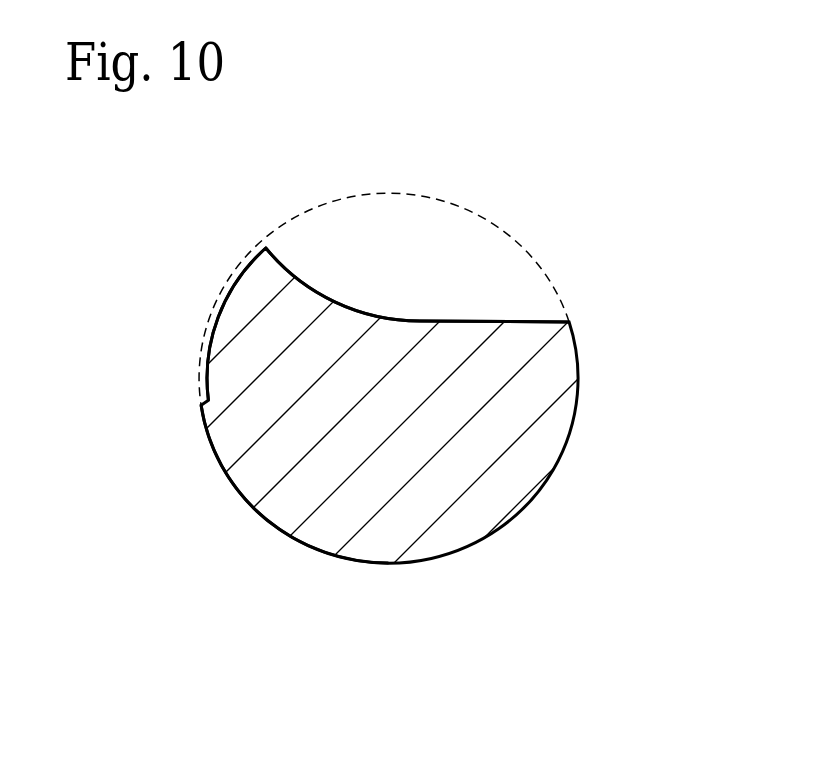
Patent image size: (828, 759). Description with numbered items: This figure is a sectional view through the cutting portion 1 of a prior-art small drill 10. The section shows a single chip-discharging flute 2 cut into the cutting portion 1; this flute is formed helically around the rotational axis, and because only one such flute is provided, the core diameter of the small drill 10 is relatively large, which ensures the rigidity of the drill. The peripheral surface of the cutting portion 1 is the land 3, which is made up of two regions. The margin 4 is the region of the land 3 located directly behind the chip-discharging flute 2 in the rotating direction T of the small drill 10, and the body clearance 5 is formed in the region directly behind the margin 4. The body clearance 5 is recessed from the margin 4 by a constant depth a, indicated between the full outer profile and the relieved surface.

The small drill 10 is at (503, 167).
The cutting portion 1 is at (560, 223).
The chip-discharging flute 2 is at (422, 248).
The land 3 is at (242, 498).
The margin 4 is at (319, 553).
The body clearance 5 is at (213, 340).
The depth a is at (257, 327).
The rotating direction T is at (646, 328).